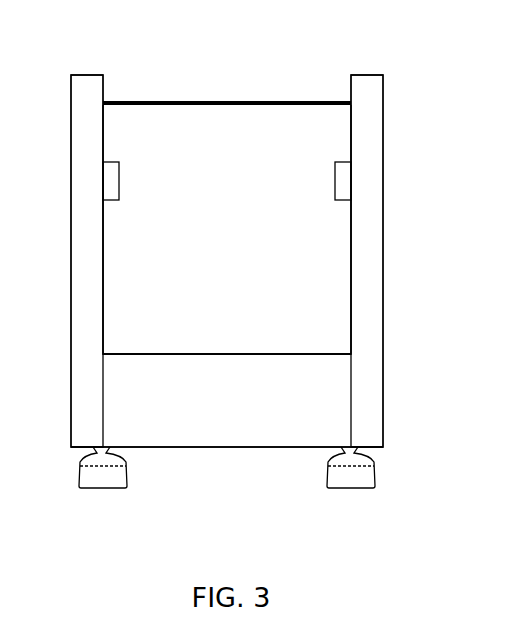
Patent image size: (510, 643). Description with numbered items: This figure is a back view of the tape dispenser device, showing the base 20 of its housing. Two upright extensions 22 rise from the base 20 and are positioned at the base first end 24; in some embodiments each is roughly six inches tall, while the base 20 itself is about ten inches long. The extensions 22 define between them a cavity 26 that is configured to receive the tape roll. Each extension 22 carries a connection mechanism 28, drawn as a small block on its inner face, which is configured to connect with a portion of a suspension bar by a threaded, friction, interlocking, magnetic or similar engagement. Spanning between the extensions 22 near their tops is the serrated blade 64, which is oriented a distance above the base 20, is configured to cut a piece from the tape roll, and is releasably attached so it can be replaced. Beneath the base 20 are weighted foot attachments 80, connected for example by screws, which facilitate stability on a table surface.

The base 20 is at (278, 455).
The extensions 22 is at (80, 92).
The base first end 24 is at (362, 395).
The cavity 26 is at (319, 259).
The connection mechanism 28 is at (113, 185).
The serrated blade 64 is at (325, 101).
The weighted foot attachments 80 is at (93, 477).